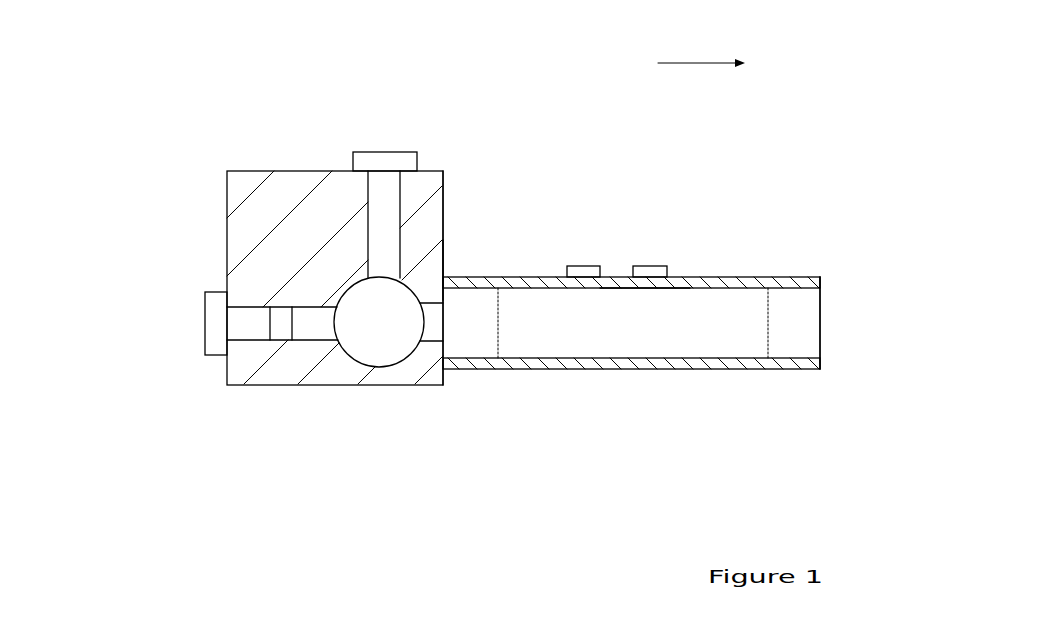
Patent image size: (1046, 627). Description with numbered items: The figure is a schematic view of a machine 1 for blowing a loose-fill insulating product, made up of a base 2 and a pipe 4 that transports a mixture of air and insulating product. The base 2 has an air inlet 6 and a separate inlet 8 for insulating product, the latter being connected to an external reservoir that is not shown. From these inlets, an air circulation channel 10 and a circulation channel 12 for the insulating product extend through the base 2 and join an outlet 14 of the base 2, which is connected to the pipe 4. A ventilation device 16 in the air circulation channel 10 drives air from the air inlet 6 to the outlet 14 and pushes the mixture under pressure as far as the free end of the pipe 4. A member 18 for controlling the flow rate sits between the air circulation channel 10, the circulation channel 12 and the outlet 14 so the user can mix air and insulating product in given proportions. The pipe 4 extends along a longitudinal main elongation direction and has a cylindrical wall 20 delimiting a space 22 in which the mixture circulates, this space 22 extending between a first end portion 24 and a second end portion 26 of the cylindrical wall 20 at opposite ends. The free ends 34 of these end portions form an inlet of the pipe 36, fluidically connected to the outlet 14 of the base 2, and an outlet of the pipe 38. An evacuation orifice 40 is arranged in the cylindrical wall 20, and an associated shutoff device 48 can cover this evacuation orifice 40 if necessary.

The machine 1 is at (122, 149).
The base 2 is at (272, 190).
The pipe 4 is at (583, 343).
The air inlet 6 is at (217, 357).
The inlet for insulating product 8 is at (400, 150).
The air circulation channel 10 is at (248, 323).
The circulation channel for the insulating product 12 is at (385, 208).
The outlet 14 is at (453, 387).
The ventilation device 16 is at (282, 315).
The member for controlling the flow rate 18 is at (367, 343).
The cylindrical wall 20 is at (540, 277).
The space 22 is at (732, 318).
The first end portion 24 is at (482, 307).
The second end portion 26 is at (793, 347).
The free ends 34 is at (631, 304).
The inlet of the pipe 36 is at (445, 275).
The outlet of the pipe 38 is at (824, 290).
The evacuation orifice 40 is at (618, 294).
The shutoff device 48 is at (588, 262).